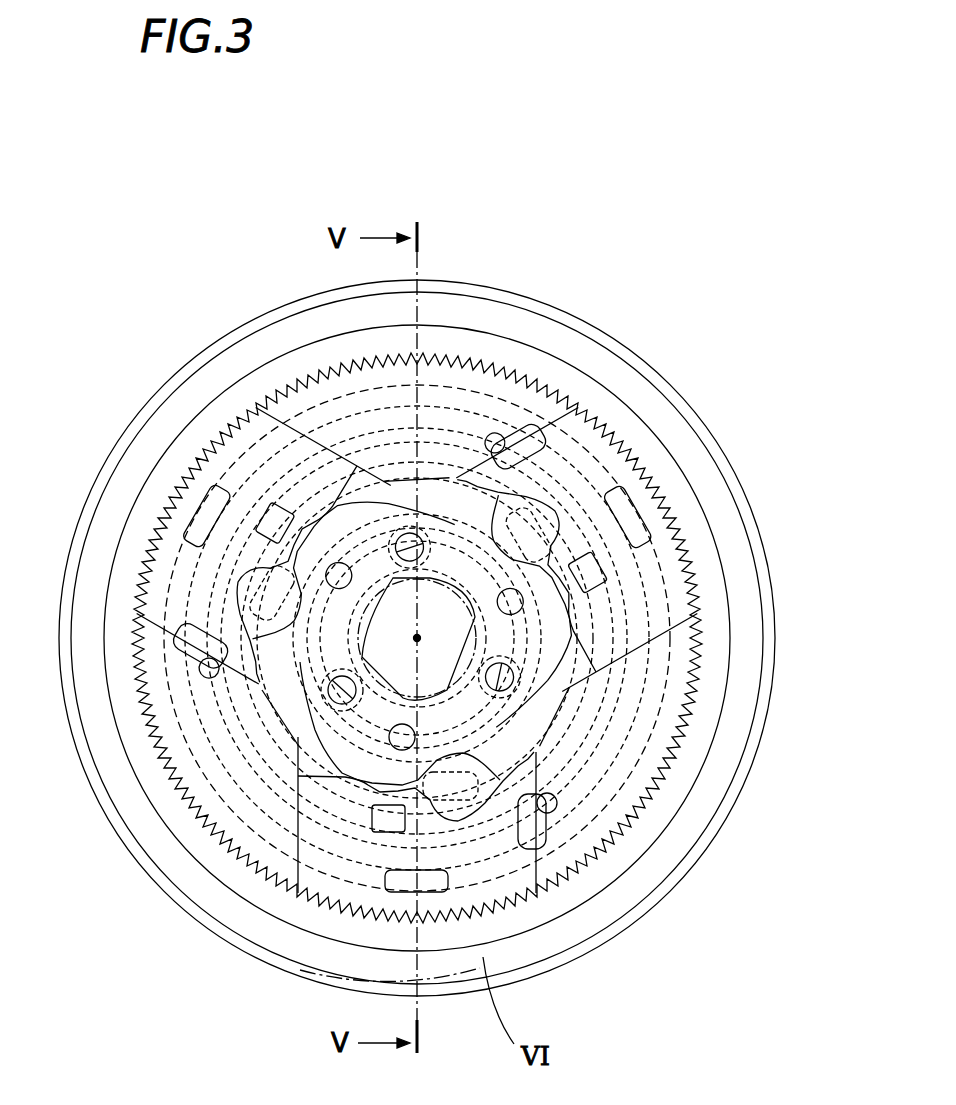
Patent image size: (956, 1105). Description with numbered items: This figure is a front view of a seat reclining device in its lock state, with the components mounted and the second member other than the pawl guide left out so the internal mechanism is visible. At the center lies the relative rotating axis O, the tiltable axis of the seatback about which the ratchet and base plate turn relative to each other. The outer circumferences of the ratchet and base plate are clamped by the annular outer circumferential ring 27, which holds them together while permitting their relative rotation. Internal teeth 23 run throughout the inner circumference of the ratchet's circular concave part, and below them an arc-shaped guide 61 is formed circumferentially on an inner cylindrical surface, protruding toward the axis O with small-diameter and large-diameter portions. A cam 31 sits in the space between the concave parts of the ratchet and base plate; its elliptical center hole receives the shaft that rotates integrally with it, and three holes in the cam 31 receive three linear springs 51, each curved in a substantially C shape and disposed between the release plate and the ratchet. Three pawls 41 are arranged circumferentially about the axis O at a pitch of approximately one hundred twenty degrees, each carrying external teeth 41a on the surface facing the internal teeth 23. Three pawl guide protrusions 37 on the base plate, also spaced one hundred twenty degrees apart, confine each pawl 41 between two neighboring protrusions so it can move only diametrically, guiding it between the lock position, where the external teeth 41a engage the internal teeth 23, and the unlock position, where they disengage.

The internal teeth 23 is at (676, 517).
The outer circumferential ring 27 is at (626, 338).
The cam 31 is at (455, 505).
The pawl guide protrusion 37 is at (440, 407).
The pawl 41 is at (472, 627).
The external teeth 41a is at (472, 687).
The linear spring 51 is at (330, 462).
The arc-shaped guide 61 is at (690, 440).
The relative rotating axis O is at (330, 660).